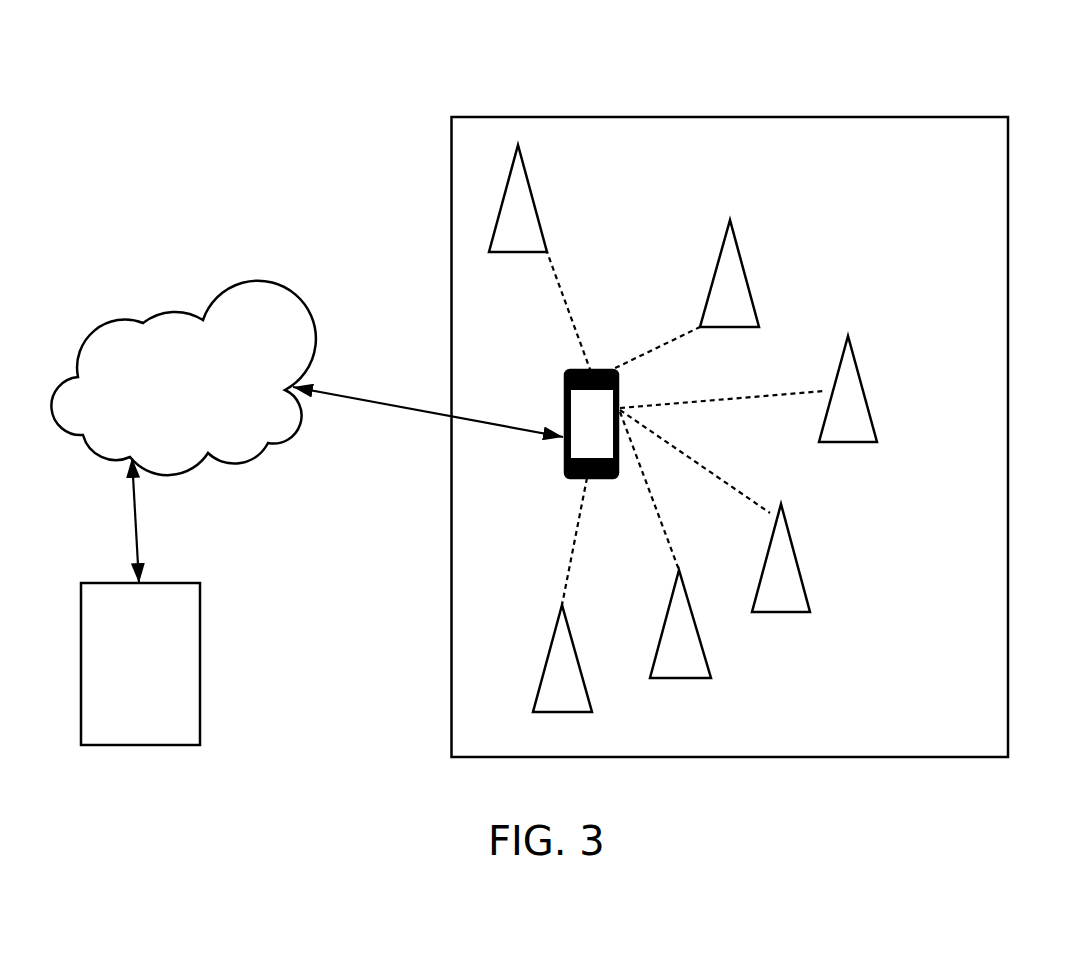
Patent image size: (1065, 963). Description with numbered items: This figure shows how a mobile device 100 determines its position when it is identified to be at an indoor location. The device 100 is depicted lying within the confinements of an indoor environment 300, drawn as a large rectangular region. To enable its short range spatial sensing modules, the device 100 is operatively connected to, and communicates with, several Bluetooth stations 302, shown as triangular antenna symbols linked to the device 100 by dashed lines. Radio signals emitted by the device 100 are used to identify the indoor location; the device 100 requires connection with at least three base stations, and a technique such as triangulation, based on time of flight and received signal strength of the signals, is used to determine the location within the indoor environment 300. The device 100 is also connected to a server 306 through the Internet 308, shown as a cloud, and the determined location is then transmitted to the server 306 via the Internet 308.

The indoor environment 300 is at (823, 117).
The device 100 is at (563, 422).
The Bluetooth stations 302 is at (608, 180).
The server 306 is at (146, 672).
The Internet 308 is at (197, 402).